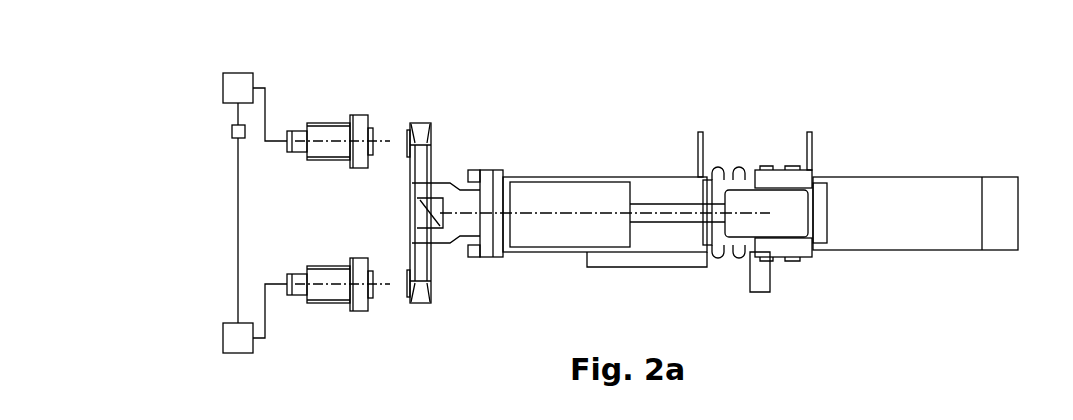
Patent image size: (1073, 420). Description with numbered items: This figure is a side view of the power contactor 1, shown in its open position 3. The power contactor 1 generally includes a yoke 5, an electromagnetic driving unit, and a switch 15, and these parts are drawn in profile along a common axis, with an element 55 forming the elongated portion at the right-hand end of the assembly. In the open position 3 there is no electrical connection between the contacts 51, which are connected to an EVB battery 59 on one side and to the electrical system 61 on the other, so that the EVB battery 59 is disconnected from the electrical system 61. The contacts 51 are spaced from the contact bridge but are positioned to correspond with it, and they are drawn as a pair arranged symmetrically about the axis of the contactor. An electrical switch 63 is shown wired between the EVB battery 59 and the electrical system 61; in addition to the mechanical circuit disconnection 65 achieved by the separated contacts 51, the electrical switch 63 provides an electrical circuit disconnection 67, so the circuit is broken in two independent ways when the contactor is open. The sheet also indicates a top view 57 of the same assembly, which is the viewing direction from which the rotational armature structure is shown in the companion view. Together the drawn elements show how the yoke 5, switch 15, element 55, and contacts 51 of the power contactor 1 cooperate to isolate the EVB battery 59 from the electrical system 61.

The power contactor 1 is at (454, 54).
The open position 3 is at (515, 98).
The yoke 5 is at (884, 404).
The switch 15 is at (325, 297).
The contacts 51 is at (322, 130).
The actuator 55 is at (1012, 156).
The top view 57 is at (1038, 419).
The EVB battery 59 is at (223, 87).
The electrical system 61 is at (238, 353).
The electrical switch 63 is at (183, 118).
The electrical circuit disconnection 67 is at (232, 131).
The mechanical circuit disconnection 65 is at (393, 314).